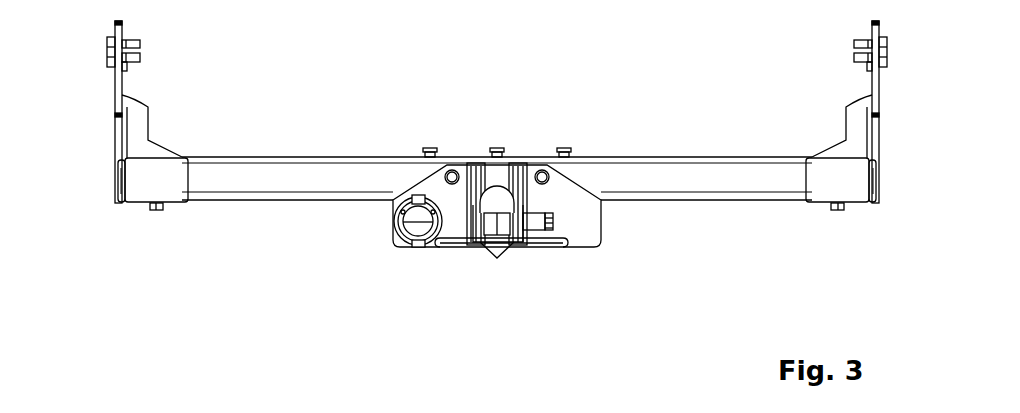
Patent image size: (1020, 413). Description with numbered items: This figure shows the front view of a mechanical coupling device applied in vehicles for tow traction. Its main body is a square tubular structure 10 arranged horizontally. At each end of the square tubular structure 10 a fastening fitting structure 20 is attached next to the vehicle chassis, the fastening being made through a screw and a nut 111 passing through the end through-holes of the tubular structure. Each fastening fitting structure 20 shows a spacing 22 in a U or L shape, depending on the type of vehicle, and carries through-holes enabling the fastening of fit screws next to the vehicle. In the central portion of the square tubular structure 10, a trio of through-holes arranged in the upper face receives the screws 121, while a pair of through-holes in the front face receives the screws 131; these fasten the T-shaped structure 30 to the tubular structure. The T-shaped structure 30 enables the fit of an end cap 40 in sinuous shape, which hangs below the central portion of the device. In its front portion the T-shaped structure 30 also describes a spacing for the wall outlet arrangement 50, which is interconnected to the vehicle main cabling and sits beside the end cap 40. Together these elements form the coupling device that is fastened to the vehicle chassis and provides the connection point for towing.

The square tubular structure 10 is at (316, 157).
The fastening fitting structure 20 is at (148, 107).
The spacing 22 is at (137, 185).
The nut 111 is at (161, 210).
The screws 121 is at (563, 148).
The screws 131 is at (446, 172).
The T-shaped structure 30 is at (575, 218).
The end cap 40 is at (495, 256).
The wall outlet arrangement 50 is at (396, 240).